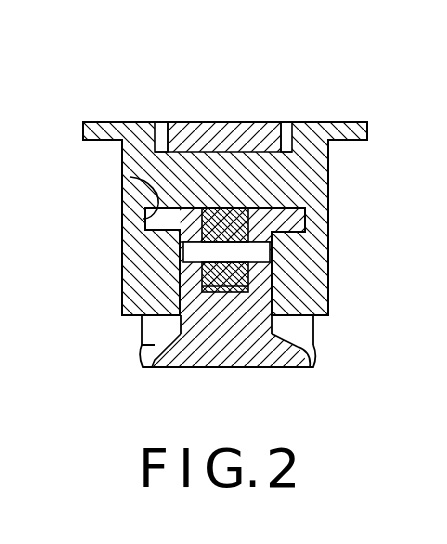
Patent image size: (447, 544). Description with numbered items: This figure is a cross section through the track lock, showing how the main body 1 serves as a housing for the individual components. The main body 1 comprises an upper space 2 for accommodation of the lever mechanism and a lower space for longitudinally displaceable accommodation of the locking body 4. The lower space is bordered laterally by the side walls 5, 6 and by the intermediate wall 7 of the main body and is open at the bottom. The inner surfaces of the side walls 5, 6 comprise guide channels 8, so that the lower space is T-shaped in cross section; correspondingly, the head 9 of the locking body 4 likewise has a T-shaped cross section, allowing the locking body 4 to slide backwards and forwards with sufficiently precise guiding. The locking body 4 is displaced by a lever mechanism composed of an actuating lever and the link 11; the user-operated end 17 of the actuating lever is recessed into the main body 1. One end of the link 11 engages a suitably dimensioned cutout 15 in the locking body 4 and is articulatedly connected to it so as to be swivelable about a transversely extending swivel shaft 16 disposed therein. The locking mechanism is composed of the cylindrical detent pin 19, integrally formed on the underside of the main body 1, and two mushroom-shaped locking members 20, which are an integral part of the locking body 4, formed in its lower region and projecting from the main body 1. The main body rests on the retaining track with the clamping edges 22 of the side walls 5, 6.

The main body 1 is at (101, 121).
The upper space 2 is at (288, 126).
The locking body 4 is at (238, 330).
The side wall 5 is at (140, 244).
The side wall 6 is at (290, 288).
The intermediate wall 7 is at (288, 171).
The guide channels 8 is at (130, 177).
The head 9 is at (190, 220).
The link 11 is at (223, 219).
The cutout 15 is at (220, 287).
The swivel shaft 16 is at (242, 255).
The user-operated end 17 is at (233, 127).
The detent pin 19 is at (288, 329).
The locking members 20 is at (138, 360).
The clamping edges 22 is at (123, 319).